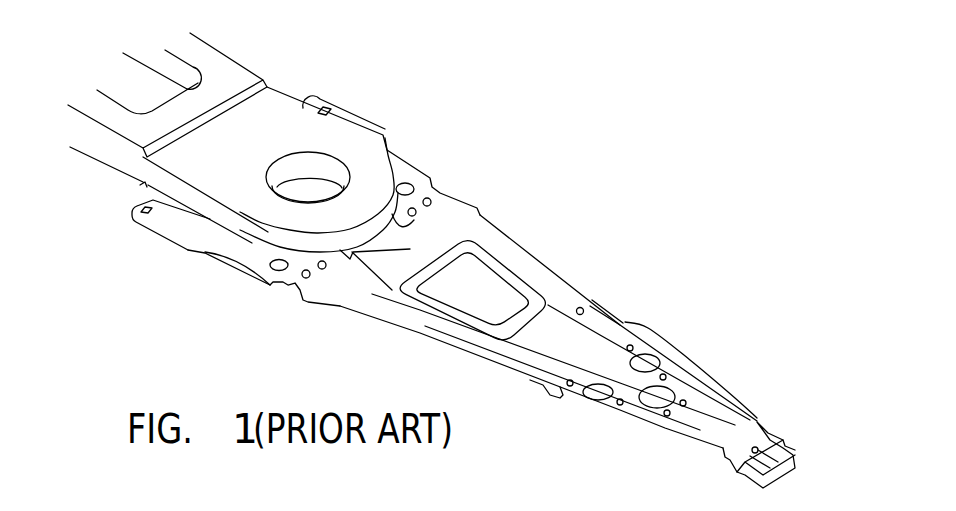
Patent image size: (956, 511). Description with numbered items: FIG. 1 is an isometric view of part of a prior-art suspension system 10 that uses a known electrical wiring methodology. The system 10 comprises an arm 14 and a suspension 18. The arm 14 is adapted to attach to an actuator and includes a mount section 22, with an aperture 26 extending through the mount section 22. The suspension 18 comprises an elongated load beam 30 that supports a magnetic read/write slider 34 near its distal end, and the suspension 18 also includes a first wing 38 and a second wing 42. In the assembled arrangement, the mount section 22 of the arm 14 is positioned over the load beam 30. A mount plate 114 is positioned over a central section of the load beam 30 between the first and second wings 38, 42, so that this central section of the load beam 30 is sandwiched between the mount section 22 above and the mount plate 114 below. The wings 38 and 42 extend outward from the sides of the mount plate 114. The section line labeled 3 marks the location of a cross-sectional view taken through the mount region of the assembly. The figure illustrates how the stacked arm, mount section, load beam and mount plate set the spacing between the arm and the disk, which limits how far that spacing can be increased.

The suspension system 10 is at (555, 226).
The arm 14 is at (203, 40).
The suspension 18 is at (400, 326).
The mount section 22 is at (268, 151).
The aperture 26 is at (370, 197).
The load beam 30 is at (560, 278).
The magnetic read/write slider 34 is at (793, 461).
The first wing 38 is at (198, 252).
The second wing 42 is at (338, 104).
The mount plate 114 is at (257, 286).
The section line 3- 3 is at (103, 248).